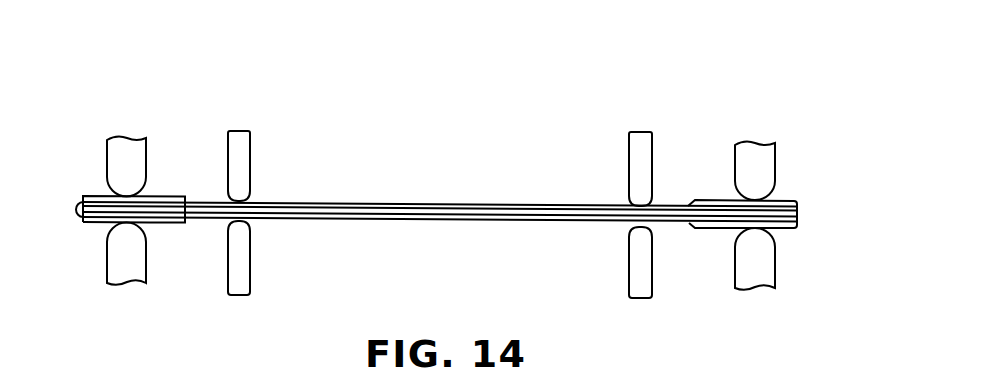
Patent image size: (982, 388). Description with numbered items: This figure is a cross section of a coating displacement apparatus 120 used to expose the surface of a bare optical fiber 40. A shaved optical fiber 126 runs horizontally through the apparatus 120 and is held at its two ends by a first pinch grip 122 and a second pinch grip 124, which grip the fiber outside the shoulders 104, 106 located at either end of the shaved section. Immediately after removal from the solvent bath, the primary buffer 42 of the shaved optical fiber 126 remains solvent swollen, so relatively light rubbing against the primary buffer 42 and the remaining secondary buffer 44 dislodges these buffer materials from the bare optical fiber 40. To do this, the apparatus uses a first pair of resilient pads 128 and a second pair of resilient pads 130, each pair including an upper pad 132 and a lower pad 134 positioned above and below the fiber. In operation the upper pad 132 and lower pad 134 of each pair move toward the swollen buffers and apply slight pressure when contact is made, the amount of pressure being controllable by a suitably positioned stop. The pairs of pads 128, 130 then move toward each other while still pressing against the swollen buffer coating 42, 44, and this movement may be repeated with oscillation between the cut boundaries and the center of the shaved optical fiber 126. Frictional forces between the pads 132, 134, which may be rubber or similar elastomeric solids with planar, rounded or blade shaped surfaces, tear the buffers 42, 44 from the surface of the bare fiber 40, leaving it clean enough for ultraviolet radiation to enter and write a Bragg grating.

The coating displacement apparatus 120 is at (520, 104).
The primary buffer 42 is at (393, 203).
The bare optical fiber 40 is at (462, 205).
The shaved optical fiber 126 is at (416, 246).
The shoulder 106 is at (185, 198).
The secondary buffer 44 is at (150, 223).
The second pinch grip 124 is at (90, 163).
The second pair of resilient pads 130 is at (274, 172).
The first pair of resilient pads 128 is at (598, 167).
The upper pad 132 is at (653, 172).
The lower pad 134 is at (640, 262).
The shoulder 104 is at (697, 223).
The first pinch grip 122 is at (797, 178).